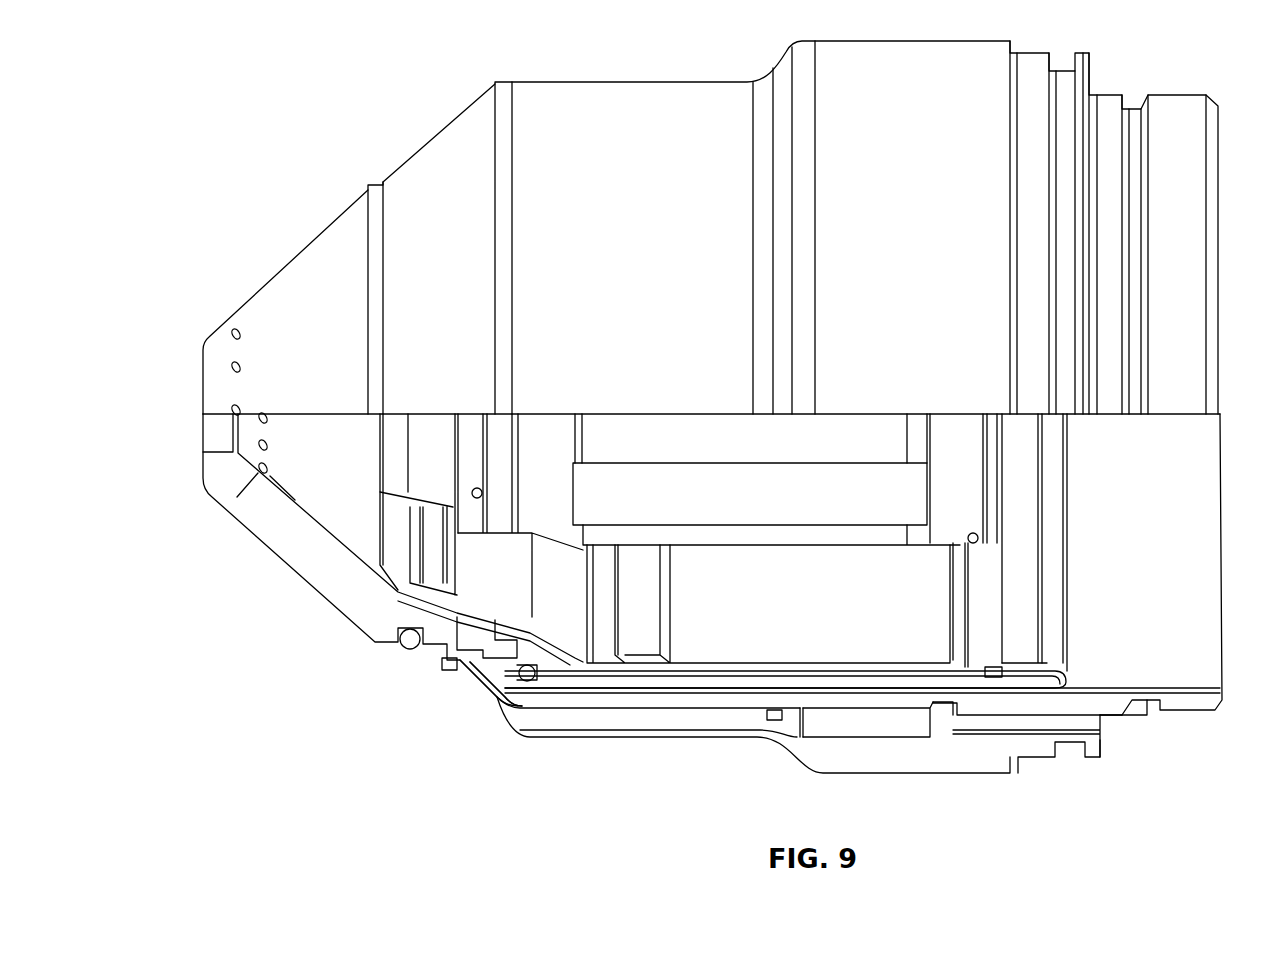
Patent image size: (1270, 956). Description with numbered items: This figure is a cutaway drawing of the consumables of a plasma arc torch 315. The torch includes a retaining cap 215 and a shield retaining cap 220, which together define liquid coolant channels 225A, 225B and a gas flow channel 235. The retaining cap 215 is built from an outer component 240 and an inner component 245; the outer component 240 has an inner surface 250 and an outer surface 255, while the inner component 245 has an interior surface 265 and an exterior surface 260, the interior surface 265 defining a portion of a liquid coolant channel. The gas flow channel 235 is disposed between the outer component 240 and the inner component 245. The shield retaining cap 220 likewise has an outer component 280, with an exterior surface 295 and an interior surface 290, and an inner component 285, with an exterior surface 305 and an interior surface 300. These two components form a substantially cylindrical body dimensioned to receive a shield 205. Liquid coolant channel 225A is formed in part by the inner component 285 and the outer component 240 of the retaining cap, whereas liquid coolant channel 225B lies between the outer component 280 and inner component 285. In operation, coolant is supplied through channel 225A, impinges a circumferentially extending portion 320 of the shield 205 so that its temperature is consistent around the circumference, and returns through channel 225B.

The shield 205 is at (333, 564).
The retaining cap 215 is at (1053, 570).
The shield retaining cap 220 is at (1050, 758).
The liquid coolant channel 225A is at (545, 699).
The liquid coolant channel 225B is at (752, 712).
The gas flow channel 235 is at (736, 507).
The outer component 240 is at (1043, 683).
The inner component 245 is at (952, 663).
The inner surface 250 is at (1018, 503).
The outer surface 255 is at (805, 699).
The exterior surface 260 is at (478, 669).
The interior surface 265 is at (796, 614).
The outer component 280 is at (992, 758).
The inner component 285 is at (1123, 716).
The interior surface 290 is at (878, 728).
The exterior surface 295 is at (696, 317).
The interior surface 300 is at (1193, 664).
The exterior surface 305 is at (1214, 735).
The plasma arc torch 315 is at (314, 158).
The circumferentially extending portion 320 is at (530, 648).